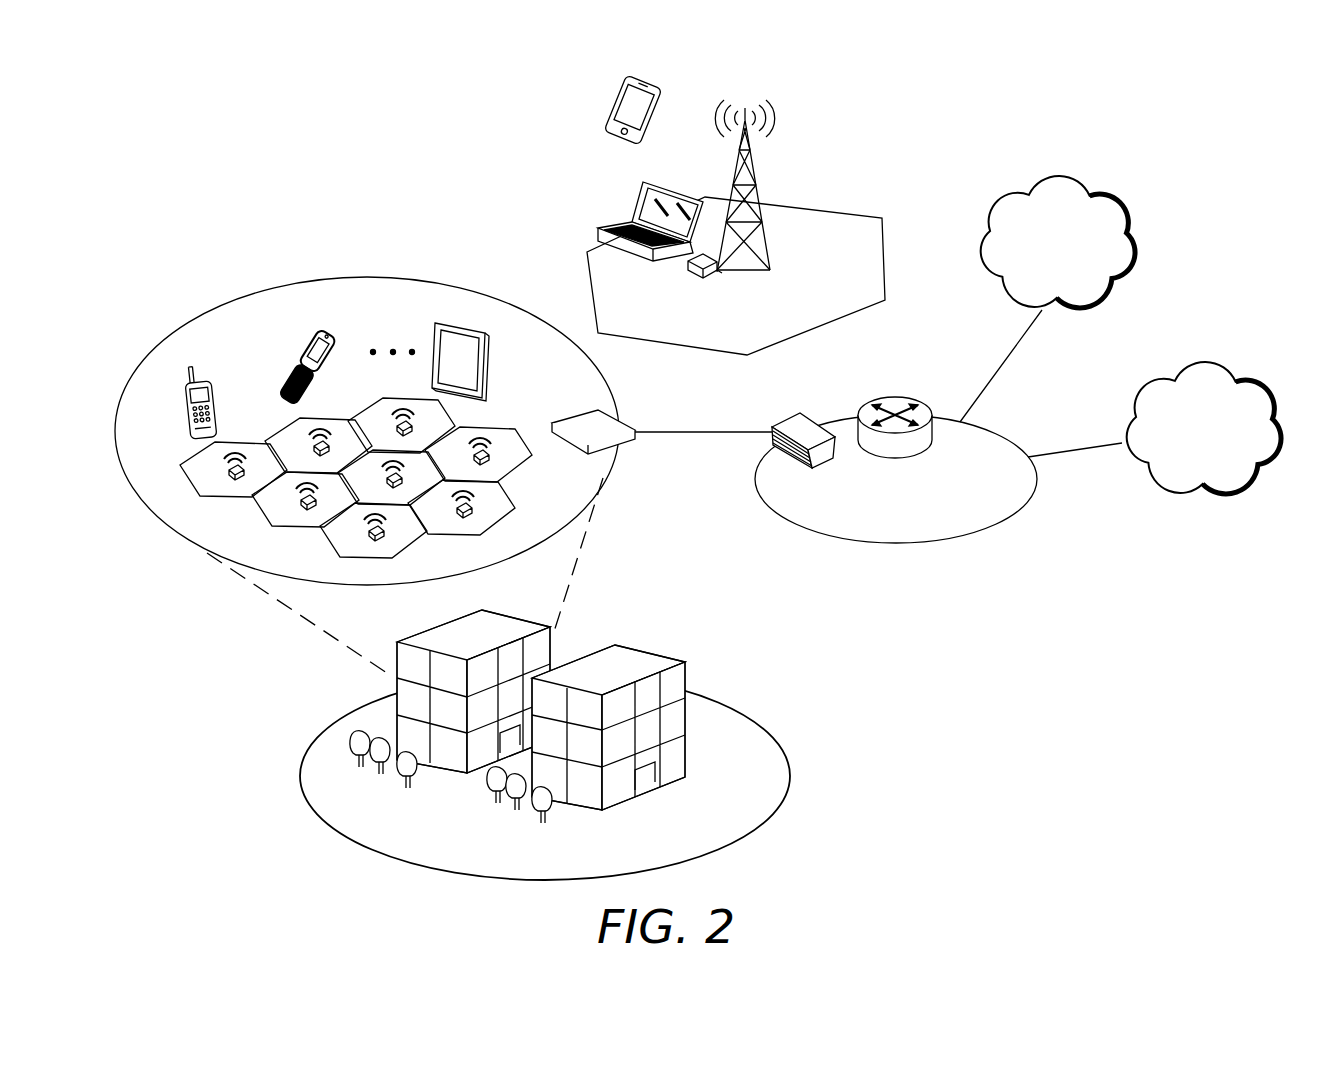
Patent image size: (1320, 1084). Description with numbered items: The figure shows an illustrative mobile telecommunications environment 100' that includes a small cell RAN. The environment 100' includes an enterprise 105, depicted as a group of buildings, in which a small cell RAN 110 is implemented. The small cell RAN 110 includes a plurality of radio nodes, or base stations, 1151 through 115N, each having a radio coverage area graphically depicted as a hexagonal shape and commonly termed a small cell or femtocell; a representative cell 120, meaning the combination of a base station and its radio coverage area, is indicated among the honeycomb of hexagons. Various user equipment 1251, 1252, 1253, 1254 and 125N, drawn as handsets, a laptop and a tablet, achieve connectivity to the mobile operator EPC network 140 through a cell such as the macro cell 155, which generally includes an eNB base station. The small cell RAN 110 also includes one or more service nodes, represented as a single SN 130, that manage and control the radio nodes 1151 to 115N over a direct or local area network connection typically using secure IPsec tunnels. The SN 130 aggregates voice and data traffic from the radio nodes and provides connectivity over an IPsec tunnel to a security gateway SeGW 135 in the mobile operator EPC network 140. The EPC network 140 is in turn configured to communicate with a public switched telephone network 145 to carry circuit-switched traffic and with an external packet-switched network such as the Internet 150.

The mobile telecommunications environment 100' is at (1246, 229).
The enterprise 105 is at (301, 777).
The small cell RAN 110 is at (452, 283).
The radio node 1151 is at (476, 504).
The radio node 115N is at (528, 463).
The cell 120 is at (510, 432).
The user equipment 1251 is at (641, 78).
The user equipment 1252 is at (642, 200).
The user equipment 1253 is at (212, 382).
The user equipment 1254 is at (322, 370).
The user equipment 125N is at (487, 347).
The service node 130 is at (613, 414).
The security gateway 135 is at (788, 416).
The mobile operator EPC network 140 is at (893, 543).
The public switched telephone network 145 is at (1233, 367).
The Internet 150 is at (1087, 182).
The cell 155 is at (815, 206).